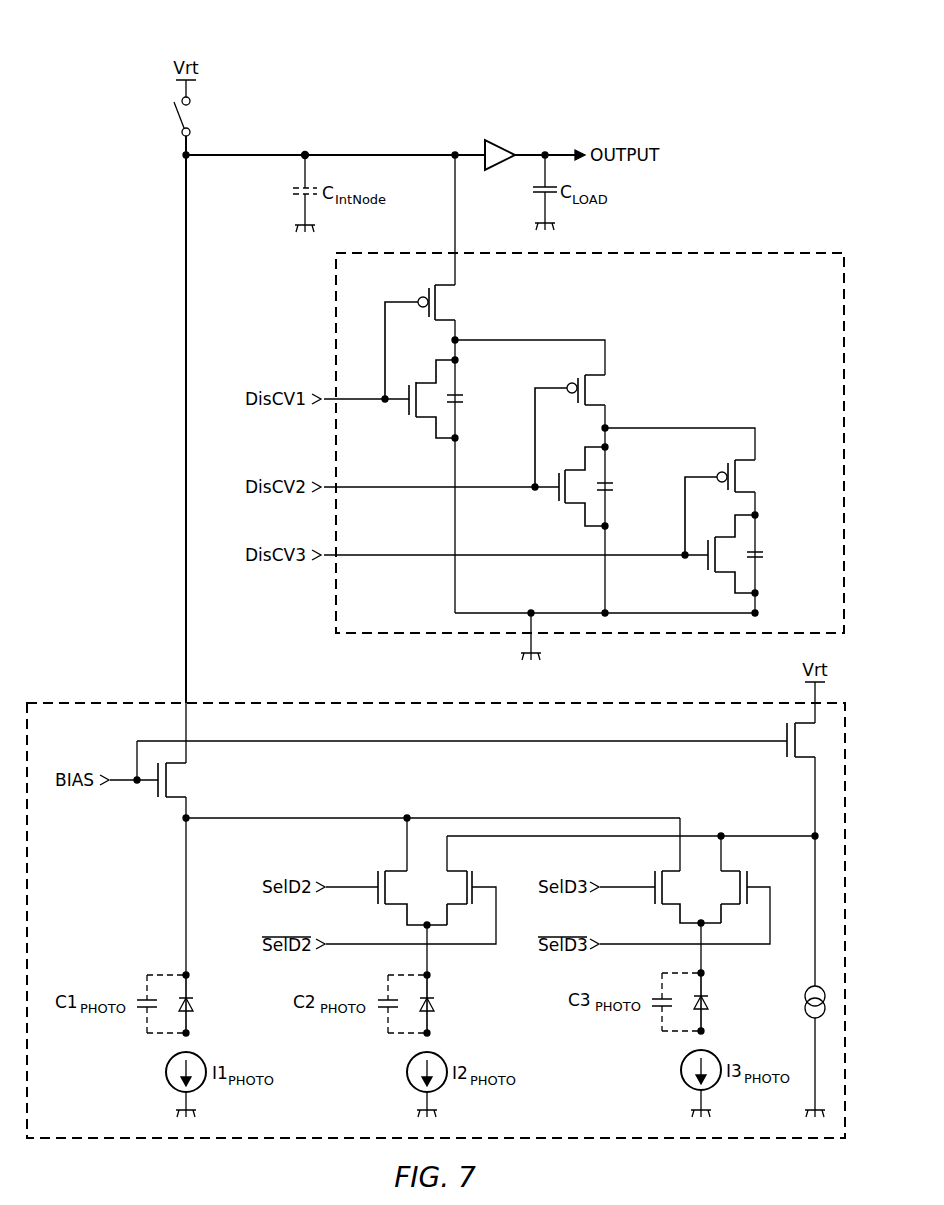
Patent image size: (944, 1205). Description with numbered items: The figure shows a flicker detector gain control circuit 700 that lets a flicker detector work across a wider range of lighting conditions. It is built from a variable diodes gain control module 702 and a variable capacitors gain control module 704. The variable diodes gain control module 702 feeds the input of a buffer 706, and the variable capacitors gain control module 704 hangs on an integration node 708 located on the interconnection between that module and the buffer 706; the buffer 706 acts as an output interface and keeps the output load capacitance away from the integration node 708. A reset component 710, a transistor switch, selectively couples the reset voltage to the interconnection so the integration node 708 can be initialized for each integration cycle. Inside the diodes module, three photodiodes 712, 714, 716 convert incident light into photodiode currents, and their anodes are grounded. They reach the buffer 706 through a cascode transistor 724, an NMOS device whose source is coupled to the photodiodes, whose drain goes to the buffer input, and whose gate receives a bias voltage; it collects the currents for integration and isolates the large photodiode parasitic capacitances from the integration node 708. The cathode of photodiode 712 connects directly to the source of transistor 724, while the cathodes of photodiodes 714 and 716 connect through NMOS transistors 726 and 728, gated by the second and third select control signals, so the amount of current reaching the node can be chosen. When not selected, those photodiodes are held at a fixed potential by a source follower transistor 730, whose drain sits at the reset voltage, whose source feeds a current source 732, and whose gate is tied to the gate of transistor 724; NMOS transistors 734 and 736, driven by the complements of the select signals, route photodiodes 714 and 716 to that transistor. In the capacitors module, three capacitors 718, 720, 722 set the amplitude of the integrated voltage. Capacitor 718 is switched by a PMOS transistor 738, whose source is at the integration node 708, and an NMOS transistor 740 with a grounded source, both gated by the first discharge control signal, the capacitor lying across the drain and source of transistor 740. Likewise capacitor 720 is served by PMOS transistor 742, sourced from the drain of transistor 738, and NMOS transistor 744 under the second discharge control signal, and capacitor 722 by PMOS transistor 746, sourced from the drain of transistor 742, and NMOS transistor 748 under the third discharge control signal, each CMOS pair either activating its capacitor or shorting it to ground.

The flicker detector gain control circuit 700 is at (766, 124).
The variable diodes gain control module 702 is at (106, 696).
The variable capacitors gain control module 704 is at (742, 352).
The buffer 706 is at (500, 141).
The integration node 708 is at (303, 152).
The reset component 710 is at (172, 122).
The photodiode 712 is at (195, 1001).
The photodiode 714 is at (436, 1001).
The photodiode 716 is at (710, 999).
The capacitor 718 is at (467, 400).
The capacitor 720 is at (616, 490).
The capacitor 722 is at (766, 560).
The cascode transistor 724 is at (157, 792).
The NMOS transistor 726 is at (373, 873).
The NMOS transistor 728 is at (651, 873).
The source follower transistor 730 is at (785, 750).
The current source 732 is at (806, 1012).
The NMOS transistor 734 is at (478, 875).
The NMOS transistor 736 is at (752, 875).
The PMOS transistor 738 is at (425, 290).
The NMOS transistor 740 is at (406, 413).
The PMOS transistor 742 is at (575, 382).
The NMOS transistor 744 is at (555, 498).
The PMOS transistor 746 is at (724, 467).
The NMOS transistor 748 is at (705, 565).